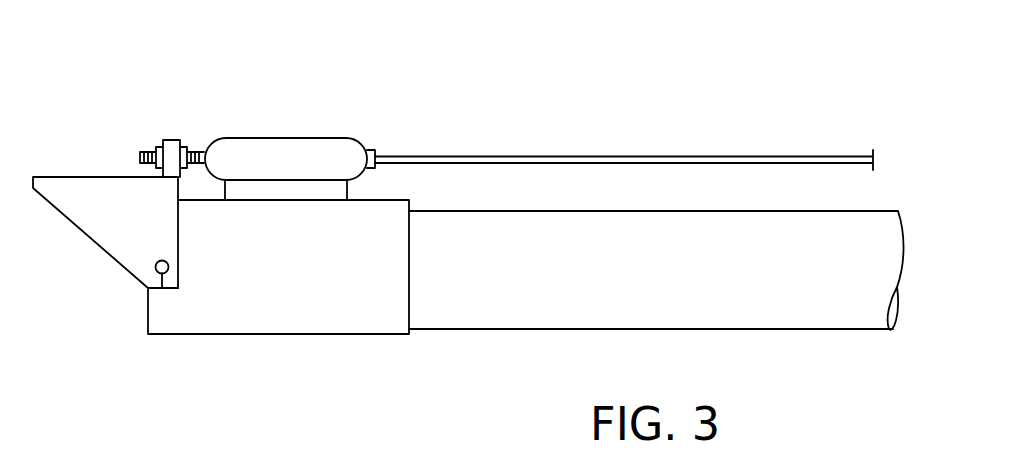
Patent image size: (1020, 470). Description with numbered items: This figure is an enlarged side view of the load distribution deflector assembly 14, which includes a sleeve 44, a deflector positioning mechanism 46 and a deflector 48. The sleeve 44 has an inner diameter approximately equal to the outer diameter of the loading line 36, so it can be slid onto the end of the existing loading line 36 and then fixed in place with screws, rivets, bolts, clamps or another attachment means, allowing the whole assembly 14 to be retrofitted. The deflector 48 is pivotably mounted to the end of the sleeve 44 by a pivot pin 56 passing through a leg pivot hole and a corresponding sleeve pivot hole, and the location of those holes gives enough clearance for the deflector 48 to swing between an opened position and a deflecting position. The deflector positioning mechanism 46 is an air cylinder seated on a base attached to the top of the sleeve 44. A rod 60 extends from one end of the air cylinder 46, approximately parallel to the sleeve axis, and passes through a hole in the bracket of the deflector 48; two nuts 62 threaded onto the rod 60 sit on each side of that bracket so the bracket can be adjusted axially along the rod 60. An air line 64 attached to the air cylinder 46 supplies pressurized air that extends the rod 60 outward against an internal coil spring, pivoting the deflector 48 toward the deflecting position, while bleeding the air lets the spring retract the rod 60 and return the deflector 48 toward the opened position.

The load distribution deflector assembly 14 is at (275, 107).
The loading line 36 is at (612, 225).
The sleeve 44 is at (372, 323).
The deflector positioning mechanism 46 is at (300, 153).
The deflector 48 is at (118, 220).
The pivot pin 56 is at (162, 284).
The rod 60 is at (195, 153).
The nuts 62 is at (183, 142).
The air line 64 is at (562, 157).